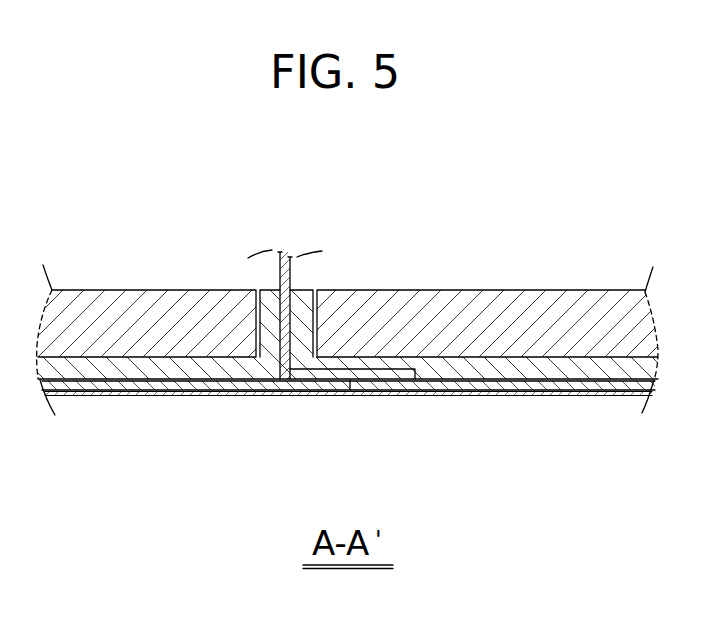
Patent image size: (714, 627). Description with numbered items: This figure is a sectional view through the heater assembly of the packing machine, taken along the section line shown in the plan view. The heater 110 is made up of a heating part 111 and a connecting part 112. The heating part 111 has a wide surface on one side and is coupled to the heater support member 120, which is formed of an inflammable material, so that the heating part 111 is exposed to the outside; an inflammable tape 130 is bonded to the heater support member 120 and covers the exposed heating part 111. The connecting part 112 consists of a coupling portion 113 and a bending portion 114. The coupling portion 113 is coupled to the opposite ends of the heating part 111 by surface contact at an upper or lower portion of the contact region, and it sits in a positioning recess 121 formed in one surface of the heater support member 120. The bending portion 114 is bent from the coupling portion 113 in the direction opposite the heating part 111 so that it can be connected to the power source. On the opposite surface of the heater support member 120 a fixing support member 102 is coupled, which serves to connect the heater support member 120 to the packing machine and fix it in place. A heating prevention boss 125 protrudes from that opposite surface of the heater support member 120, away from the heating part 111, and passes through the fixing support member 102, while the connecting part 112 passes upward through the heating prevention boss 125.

The fixing support member 102 is at (585, 300).
The heater 110 is at (365, 412).
The heating part 111 is at (197, 393).
The connecting part 112 is at (420, 243).
The coupling portion 113 is at (395, 375).
The bending portion 114 is at (295, 292).
The heater support member 120 is at (137, 365).
The positioning recess 121 is at (420, 377).
The heating prevention boss 125 is at (263, 310).
The inflammable tape 130 is at (128, 392).